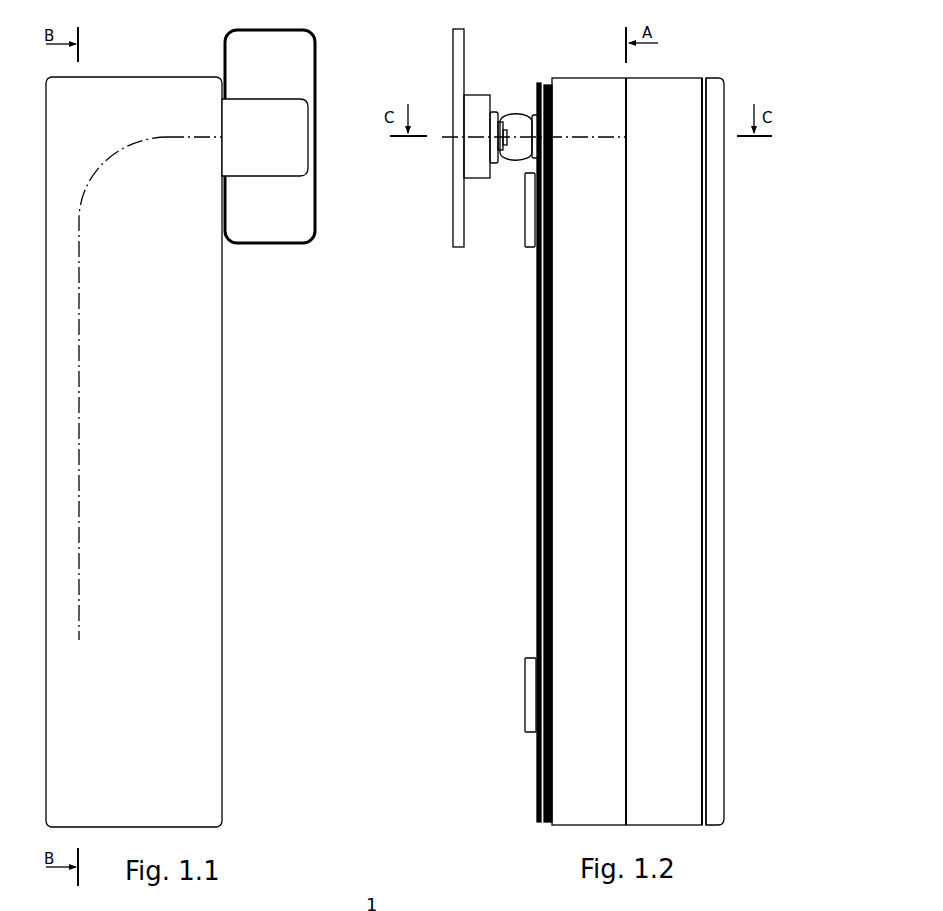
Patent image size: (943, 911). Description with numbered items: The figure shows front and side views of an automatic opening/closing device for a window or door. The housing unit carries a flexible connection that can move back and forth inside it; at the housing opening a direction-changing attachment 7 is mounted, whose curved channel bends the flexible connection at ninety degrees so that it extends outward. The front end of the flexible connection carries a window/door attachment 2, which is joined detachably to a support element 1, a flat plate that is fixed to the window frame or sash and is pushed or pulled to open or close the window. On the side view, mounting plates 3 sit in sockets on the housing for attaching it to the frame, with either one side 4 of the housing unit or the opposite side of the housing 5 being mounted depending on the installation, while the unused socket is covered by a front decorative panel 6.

In FIG. 1.1, the support element 1 is at (247, 230).
In FIG. 1.2, the support element 1 is at (453, 99).
In FIG. 1.2, the window/door attachment 2 is at (489, 136).
In FIG. 1.2, the mounting plates 3 is at (527, 247).
In FIG. 1.2, the side of the housing unit 4 is at (536, 290).
In FIG. 1.2, the opposite side of the housing 5 is at (702, 234).
In FIG. 1.1, the front decorative panel 6 is at (209, 504).
In FIG. 1.2, the front decorative panel 6 is at (723, 295).
In FIG. 1.1, the direction-changing attachment 7 is at (295, 158).